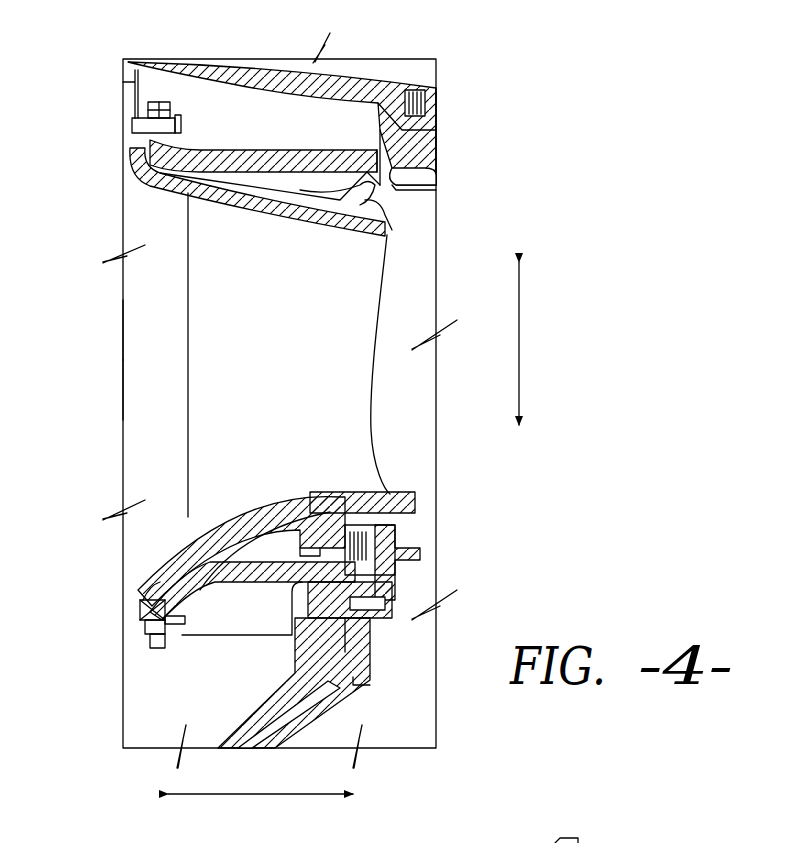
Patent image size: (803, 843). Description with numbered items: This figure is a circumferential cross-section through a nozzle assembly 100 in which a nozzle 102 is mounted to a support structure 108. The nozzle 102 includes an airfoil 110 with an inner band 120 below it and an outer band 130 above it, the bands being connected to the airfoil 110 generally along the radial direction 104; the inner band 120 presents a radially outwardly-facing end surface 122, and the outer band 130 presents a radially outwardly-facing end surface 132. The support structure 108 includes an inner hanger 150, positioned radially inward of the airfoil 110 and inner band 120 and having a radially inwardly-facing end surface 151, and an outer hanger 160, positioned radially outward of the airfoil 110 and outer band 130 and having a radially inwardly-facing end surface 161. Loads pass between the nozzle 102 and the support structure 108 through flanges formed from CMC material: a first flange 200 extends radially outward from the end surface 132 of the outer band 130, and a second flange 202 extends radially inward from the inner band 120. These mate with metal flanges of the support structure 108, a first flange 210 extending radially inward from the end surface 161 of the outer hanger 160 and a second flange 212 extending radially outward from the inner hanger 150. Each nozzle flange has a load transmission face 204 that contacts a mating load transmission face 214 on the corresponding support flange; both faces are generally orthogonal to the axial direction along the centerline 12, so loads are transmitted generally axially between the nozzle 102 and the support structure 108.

The centerline 12 is at (265, 796).
The gas turbine engine assembly 100 is at (140, 283).
The nozzle 102 is at (158, 374).
The radial direction 104 is at (523, 344).
The support structure 108 is at (218, 118).
The airfoil 110 is at (158, 331).
The inner band 120 is at (136, 590).
The radially outwardly-facing end surface 122 is at (220, 612).
The outer band 130 is at (148, 185).
The radially outwardly-facing end surface 132 is at (255, 195).
The inner hanger 150 is at (152, 630).
The radially inwardly-facing end surface 151 is at (215, 560).
The outer hanger 160 is at (135, 150).
The radially inwardly-facing end surface 161 is at (275, 200).
The first flange 200 is at (305, 188).
The second flange 202 is at (258, 595).
The load transmission face 204 is at (385, 230).
The first flange 210 is at (412, 207).
The second flange 212 is at (405, 565).
The mating load transmission face 214 is at (330, 200).